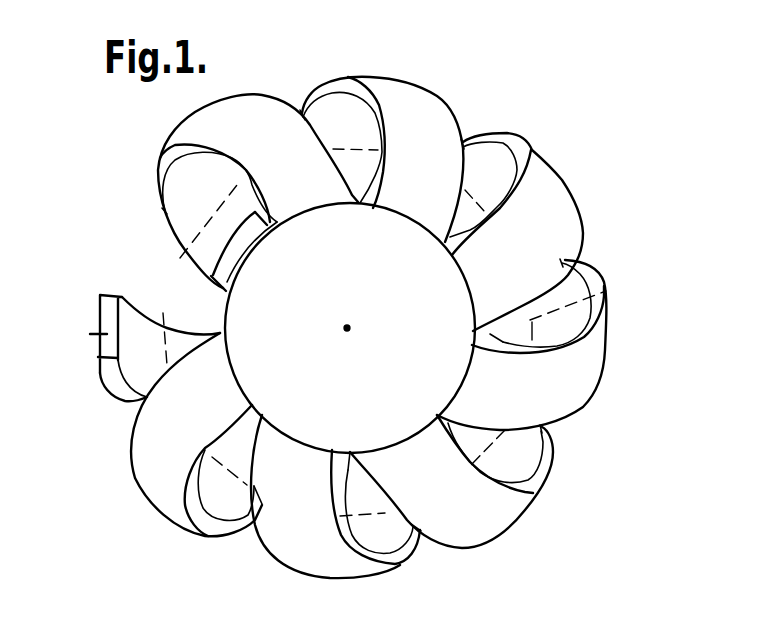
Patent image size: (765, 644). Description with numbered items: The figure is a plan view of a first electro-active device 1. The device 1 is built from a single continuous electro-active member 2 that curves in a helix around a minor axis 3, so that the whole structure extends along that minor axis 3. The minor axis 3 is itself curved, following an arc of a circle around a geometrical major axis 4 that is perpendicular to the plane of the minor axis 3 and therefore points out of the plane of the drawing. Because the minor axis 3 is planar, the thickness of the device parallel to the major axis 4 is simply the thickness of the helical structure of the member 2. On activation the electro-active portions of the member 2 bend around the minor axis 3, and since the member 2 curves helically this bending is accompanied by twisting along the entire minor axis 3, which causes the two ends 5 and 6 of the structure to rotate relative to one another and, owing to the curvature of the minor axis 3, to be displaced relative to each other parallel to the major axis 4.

The first electro-active device 1 is at (543, 146).
The continuous electro-active member 2 is at (550, 217).
The minor axis 3 is at (567, 301).
The major axis 4 is at (350, 329).
The end of the device 5 is at (232, 253).
The end of the device 6 is at (98, 332).